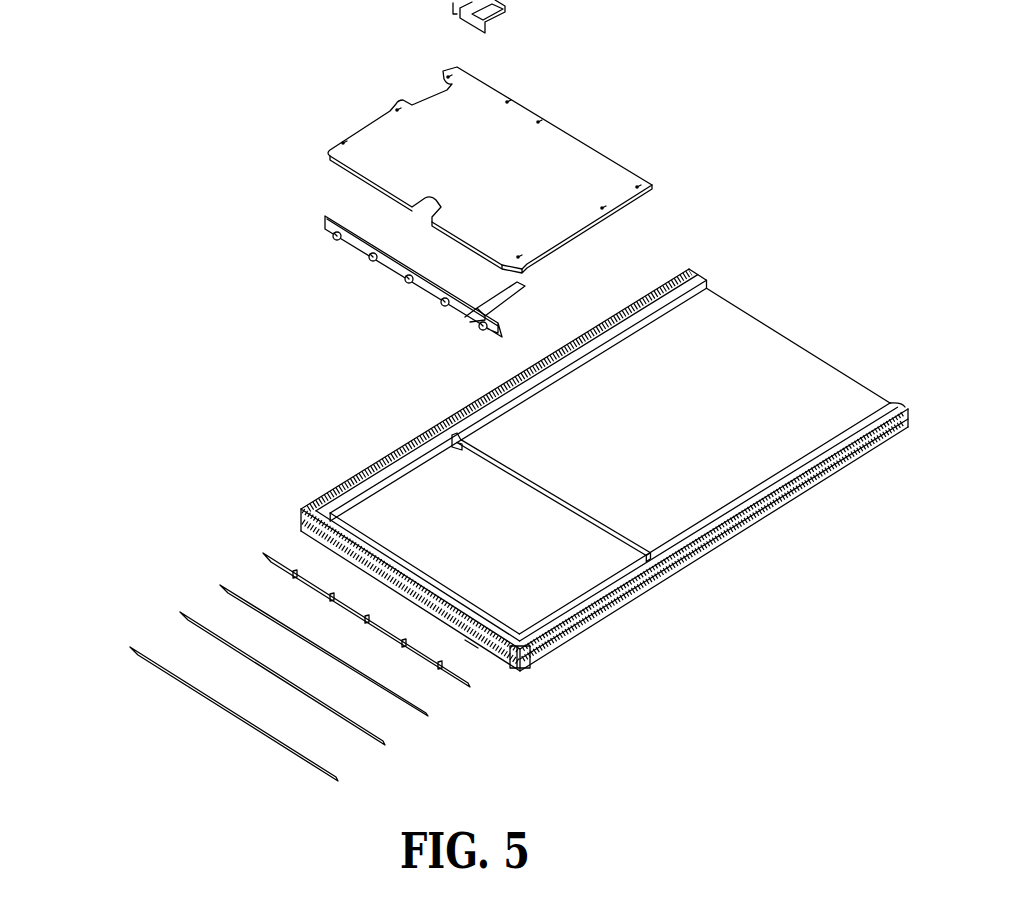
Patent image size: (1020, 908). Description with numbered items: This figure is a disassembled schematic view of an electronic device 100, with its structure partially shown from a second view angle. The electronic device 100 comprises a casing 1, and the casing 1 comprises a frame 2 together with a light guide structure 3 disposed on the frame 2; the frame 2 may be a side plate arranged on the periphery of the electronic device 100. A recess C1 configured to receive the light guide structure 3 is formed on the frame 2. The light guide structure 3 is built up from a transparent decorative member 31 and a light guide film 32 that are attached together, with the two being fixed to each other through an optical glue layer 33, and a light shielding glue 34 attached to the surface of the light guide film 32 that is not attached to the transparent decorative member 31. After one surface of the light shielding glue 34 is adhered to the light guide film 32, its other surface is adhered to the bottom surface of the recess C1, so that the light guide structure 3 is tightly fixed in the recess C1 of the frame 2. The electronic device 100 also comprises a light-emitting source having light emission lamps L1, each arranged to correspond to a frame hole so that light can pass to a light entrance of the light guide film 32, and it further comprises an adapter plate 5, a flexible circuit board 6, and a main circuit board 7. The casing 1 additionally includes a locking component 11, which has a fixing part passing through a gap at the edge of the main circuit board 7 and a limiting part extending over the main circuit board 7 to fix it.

The electronic device 100 is at (198, 316).
The casing 1 is at (693, 568).
The frame 2 is at (521, 670).
The recess C1 is at (475, 648).
The light guide structure 3 is at (254, 642).
The transparent decorative member 31 is at (188, 692).
The light guide film 32 is at (220, 585).
The optical glue layer 33 is at (180, 613).
The light shielding glue 34 is at (263, 553).
The adapter plate 5 is at (375, 287).
The light emission lamp L1 is at (335, 236).
The flexible circuit board 6 is at (528, 287).
The main circuit board 7 is at (593, 188).
The locking component 11 is at (507, 13).